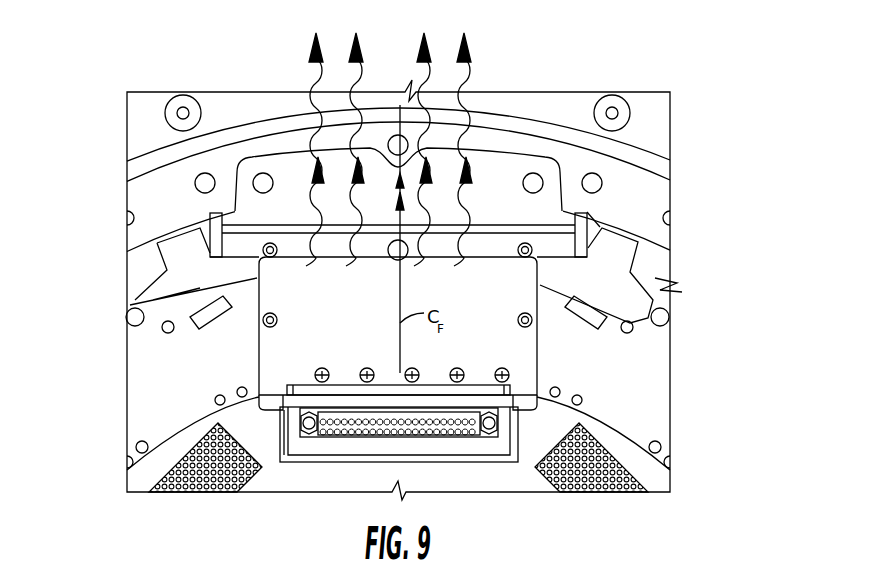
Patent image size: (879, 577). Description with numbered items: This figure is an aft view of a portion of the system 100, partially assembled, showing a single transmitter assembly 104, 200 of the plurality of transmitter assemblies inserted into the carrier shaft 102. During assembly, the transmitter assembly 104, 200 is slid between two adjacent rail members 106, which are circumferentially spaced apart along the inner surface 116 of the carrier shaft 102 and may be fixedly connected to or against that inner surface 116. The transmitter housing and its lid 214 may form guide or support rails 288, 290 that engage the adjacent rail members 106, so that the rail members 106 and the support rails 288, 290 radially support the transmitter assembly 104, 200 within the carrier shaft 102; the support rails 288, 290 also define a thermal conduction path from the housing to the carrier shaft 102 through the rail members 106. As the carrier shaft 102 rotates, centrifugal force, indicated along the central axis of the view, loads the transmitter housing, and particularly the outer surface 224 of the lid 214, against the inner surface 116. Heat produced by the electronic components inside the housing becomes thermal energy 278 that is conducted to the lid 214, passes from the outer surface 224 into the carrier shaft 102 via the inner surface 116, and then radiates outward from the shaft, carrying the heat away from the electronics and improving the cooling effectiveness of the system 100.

The system 100 is at (702, 42).
The carrier shaft 102 is at (543, 133).
The transmitter assembly 104 is at (236, 376).
The rail member 106 is at (638, 296).
The inner surface 116 is at (575, 178).
The transmitter assembly 200 is at (238, 358).
The lid 214 is at (235, 312).
The outer surface 224 is at (305, 193).
The thermal energy 278 is at (313, 70).
The support rail 288 is at (128, 280).
The support rail 290 is at (602, 230).